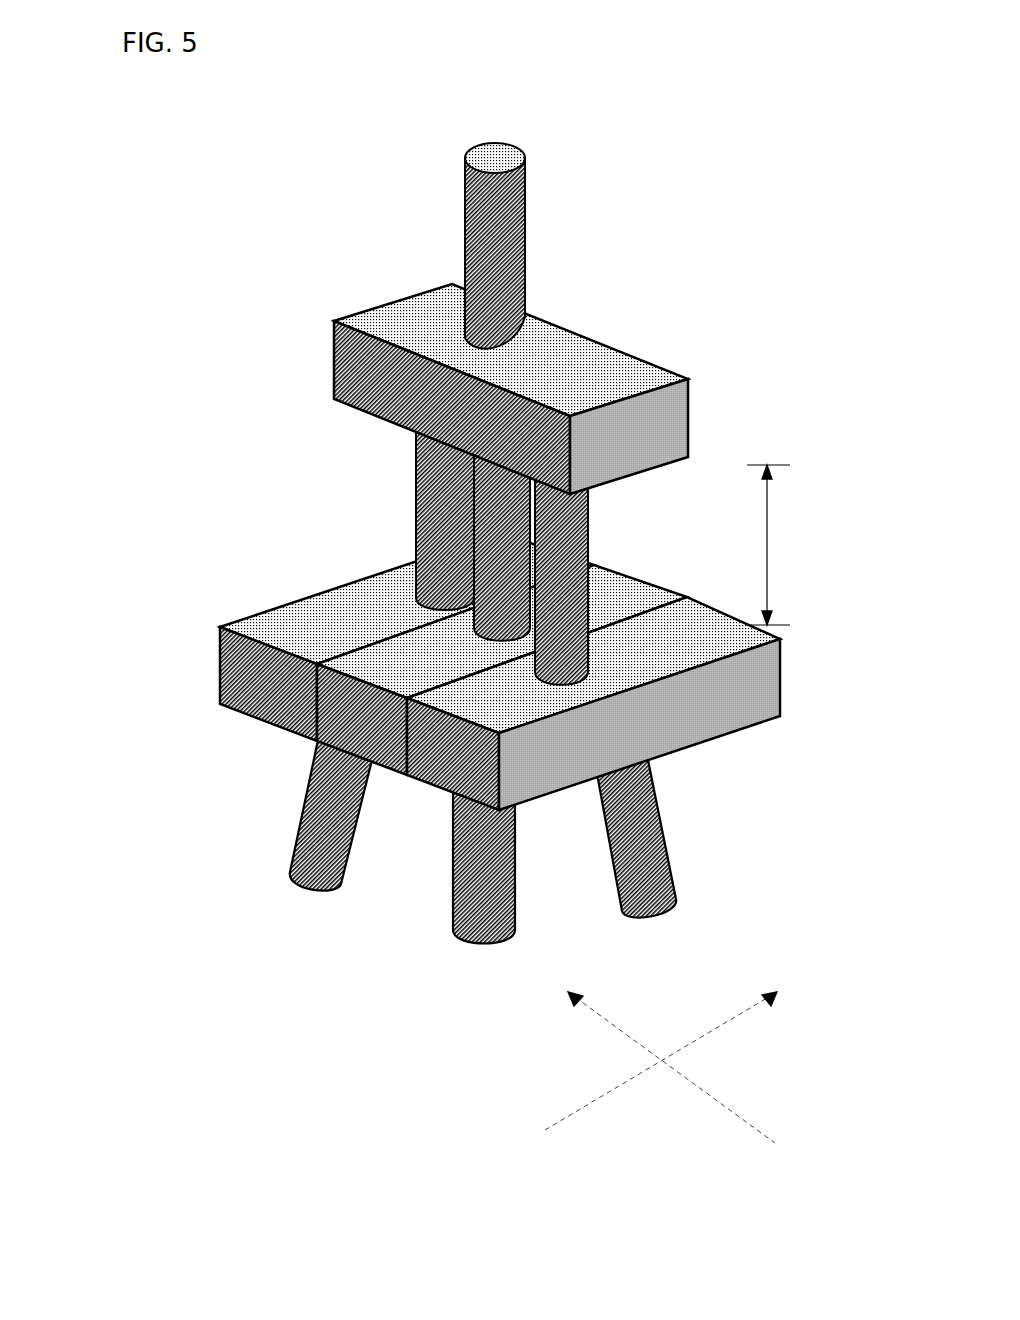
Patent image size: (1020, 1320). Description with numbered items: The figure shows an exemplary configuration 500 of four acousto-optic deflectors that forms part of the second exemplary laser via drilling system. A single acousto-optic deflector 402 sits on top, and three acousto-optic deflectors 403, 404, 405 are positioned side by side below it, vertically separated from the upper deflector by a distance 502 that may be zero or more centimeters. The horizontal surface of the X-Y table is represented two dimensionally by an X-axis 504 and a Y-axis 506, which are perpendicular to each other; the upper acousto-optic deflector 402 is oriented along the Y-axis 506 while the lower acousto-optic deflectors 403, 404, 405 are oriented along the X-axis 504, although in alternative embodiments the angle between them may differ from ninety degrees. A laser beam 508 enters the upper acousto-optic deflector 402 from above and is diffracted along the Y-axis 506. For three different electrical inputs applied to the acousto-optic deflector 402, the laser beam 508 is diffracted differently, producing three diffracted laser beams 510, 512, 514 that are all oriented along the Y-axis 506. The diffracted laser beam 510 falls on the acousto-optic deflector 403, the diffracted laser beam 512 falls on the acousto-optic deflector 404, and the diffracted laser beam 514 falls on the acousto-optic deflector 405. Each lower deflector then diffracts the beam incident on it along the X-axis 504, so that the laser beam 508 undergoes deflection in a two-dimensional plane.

The configuration 500 is at (530, 526).
The acousto-optic deflector 402 is at (658, 372).
The acousto-optic deflector 403 is at (320, 594).
The acousto-optic deflector 404 is at (663, 577).
The acousto-optic deflector 405 is at (783, 698).
The laser beam 508 is at (527, 240).
The diffracted laser beam 510 is at (417, 497).
The diffracted laser beam 512 is at (417, 538).
The diffracted laser beam 514 is at (577, 540).
The distance 502 is at (768, 578).
The X-axis 504 is at (715, 1027).
The Y-axis 506 is at (633, 1040).